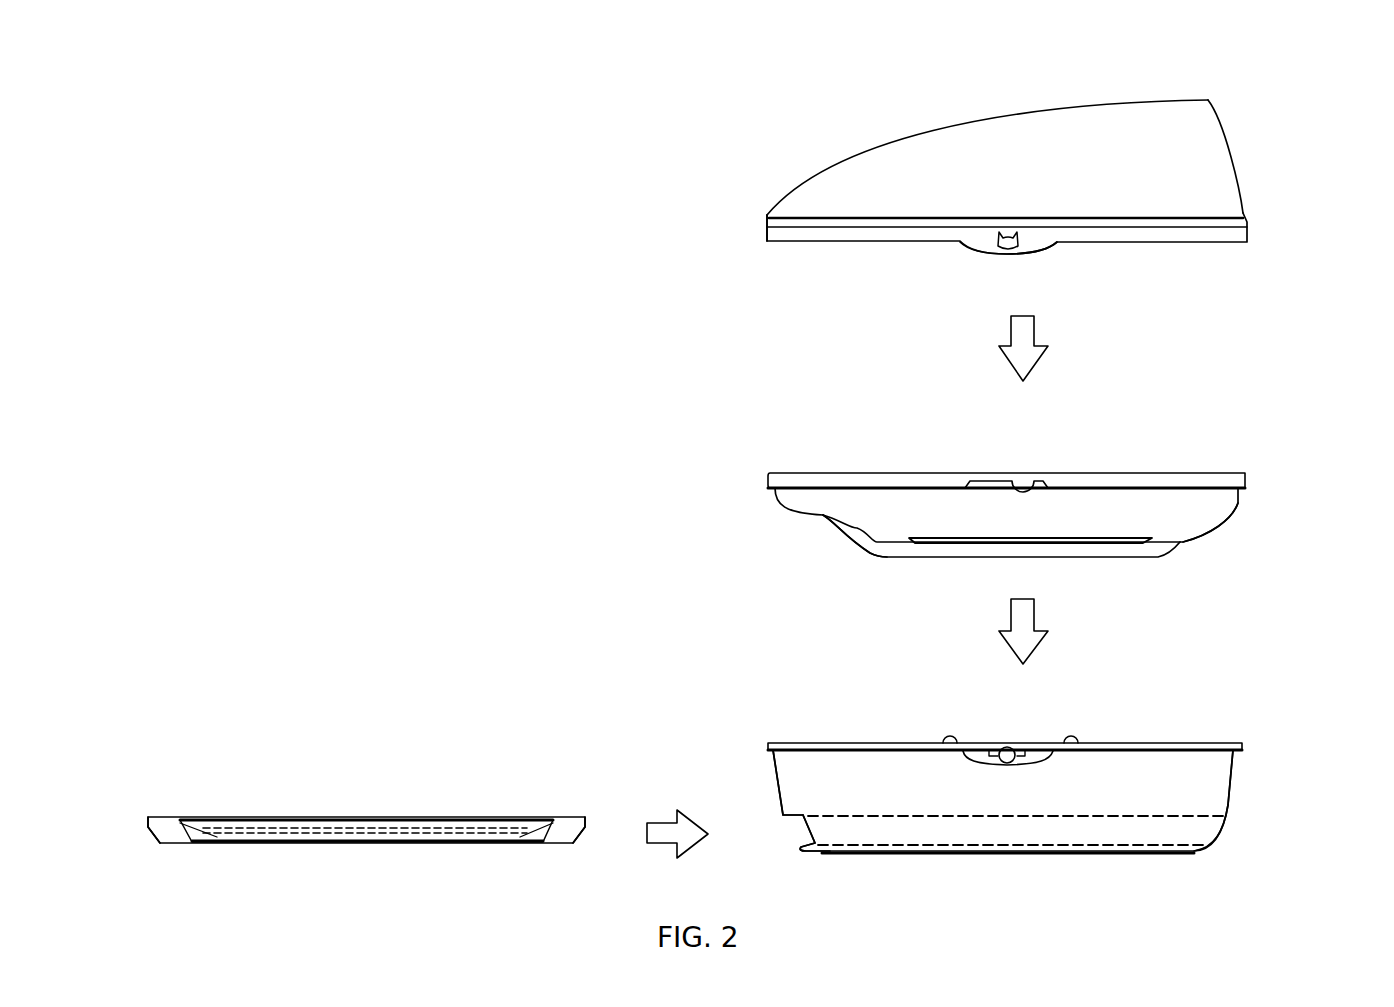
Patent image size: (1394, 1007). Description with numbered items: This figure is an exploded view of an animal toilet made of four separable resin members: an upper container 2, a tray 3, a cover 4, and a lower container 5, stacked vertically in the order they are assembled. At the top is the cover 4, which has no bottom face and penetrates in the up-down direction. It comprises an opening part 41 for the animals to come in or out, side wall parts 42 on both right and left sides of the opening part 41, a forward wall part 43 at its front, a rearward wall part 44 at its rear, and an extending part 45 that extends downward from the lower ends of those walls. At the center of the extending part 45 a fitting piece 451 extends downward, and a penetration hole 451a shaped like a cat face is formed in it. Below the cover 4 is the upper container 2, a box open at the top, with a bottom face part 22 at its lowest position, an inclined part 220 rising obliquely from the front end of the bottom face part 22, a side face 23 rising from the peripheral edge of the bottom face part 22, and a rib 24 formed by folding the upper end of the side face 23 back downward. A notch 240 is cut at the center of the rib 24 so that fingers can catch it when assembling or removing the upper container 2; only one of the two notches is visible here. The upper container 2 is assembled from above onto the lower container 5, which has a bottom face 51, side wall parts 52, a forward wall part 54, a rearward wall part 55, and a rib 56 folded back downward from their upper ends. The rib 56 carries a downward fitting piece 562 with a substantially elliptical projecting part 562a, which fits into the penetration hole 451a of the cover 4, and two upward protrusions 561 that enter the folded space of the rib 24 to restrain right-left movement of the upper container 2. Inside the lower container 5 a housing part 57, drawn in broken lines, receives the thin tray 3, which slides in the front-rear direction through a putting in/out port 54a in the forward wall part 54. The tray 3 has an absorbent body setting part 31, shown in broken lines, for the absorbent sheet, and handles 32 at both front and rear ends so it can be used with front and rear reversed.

The upper container 2 is at (849, 445).
The bottom face part 22 is at (1187, 543).
The side face 23 is at (1238, 505).
The rib 24 is at (1235, 482).
The inclined part 220 is at (856, 529).
The notch 240 is at (1022, 489).
The tray 3 is at (212, 780).
The absorbent body setting part 31 is at (340, 827).
The handle 32 is at (148, 823).
The cover 4 is at (817, 126).
The opening part 41 is at (955, 118).
The side wall part 42 is at (1092, 160).
The forward wall part 43 is at (767, 217).
The rearward wall part 44 is at (1230, 150).
The extending part 45 is at (1233, 232).
The fitting piece 451 is at (1040, 247).
The penetration hole 451a is at (1002, 244).
The lower container 5 is at (1284, 799).
The bottom face 51 is at (1016, 855).
The side wall part 52 is at (1172, 783).
The forward wall part 54 is at (773, 783).
The putting in/out port 54a is at (786, 836).
The rearward wall part 55 is at (1237, 764).
The rib 56 is at (857, 745).
The protrusion 561 is at (949, 741).
The fitting piece 562 is at (1028, 761).
The projecting part 562a is at (997, 763).
The housing part 57 is at (934, 848).